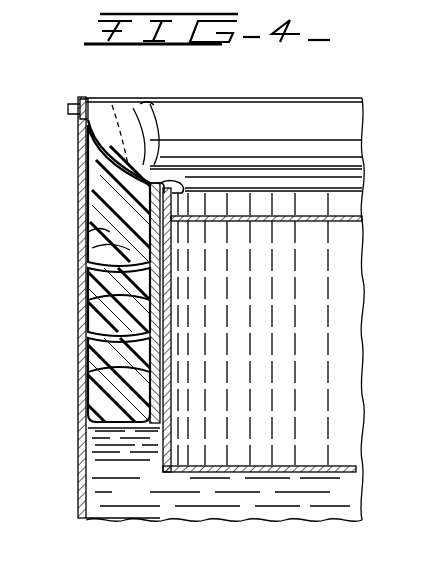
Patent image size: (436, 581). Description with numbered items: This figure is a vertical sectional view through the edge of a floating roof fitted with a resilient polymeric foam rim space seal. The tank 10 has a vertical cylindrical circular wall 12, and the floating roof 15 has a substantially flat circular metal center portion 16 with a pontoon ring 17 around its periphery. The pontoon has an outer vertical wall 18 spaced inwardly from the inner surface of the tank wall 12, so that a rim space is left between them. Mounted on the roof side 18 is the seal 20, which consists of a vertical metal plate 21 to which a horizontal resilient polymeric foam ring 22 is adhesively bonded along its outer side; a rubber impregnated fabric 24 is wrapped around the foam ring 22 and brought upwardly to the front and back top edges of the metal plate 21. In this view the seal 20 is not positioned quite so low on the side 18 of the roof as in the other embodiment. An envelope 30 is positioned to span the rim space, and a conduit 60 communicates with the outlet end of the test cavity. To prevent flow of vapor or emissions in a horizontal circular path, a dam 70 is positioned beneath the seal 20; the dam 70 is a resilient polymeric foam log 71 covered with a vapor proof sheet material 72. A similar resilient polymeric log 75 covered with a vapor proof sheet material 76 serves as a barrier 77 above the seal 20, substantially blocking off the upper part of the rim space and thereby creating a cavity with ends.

The tank 10 is at (73, 168).
The tank wall 12 is at (78, 476).
The floating roof 15 is at (355, 210).
The center portion 16 is at (330, 474).
The pontoon ring 17 is at (307, 217).
The outer vertical wall 18 is at (158, 440).
The seal 20 is at (102, 316).
The vertical metal plate 21 is at (150, 270).
The resilient polymeric foam ring 22 is at (150, 316).
The rubber impregnated fabric 24 is at (100, 340).
The envelope 30 is at (144, 163).
The conduit 60 is at (114, 80).
The dam 70 is at (112, 384).
The resilient polymeric foam log 71 is at (80, 418).
The vapor proof sheet material 72 is at (86, 370).
The resilient polymeric log 75 is at (86, 196).
The vapor proof sheet material 76 is at (86, 222).
The barrier 77 is at (114, 245).